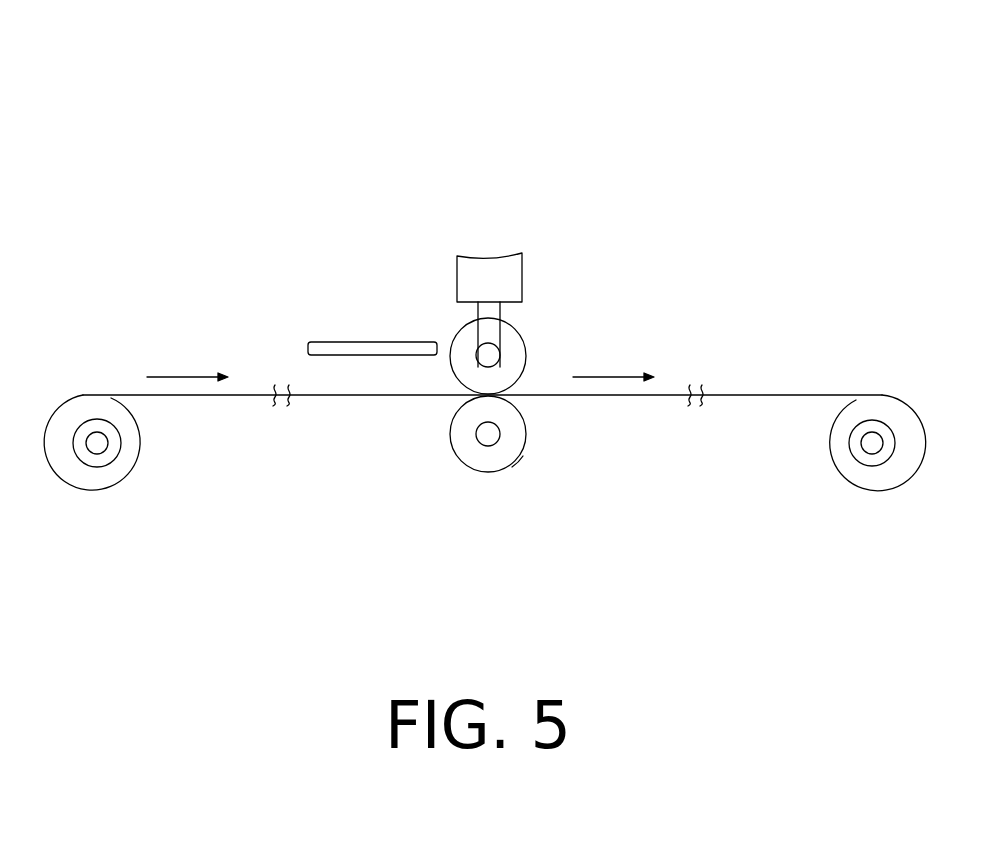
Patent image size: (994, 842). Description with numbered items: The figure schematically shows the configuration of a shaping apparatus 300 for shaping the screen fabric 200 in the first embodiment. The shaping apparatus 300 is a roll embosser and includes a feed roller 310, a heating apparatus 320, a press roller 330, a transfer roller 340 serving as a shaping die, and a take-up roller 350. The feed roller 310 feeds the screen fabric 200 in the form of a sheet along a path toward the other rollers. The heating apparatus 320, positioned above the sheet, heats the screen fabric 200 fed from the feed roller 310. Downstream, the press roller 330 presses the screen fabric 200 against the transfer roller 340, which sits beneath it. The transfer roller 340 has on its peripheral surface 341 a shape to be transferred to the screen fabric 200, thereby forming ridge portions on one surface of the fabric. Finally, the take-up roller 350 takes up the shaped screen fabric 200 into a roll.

The shaping apparatus 300 is at (174, 164).
The screen fabric 200 is at (297, 405).
The feed roller 310 is at (77, 456).
The heating apparatus 320 is at (341, 342).
The press roller 330 is at (527, 333).
The transfer roller 340 is at (489, 466).
The peripheral surface 341 is at (522, 457).
The take-up roller 350 is at (850, 458).